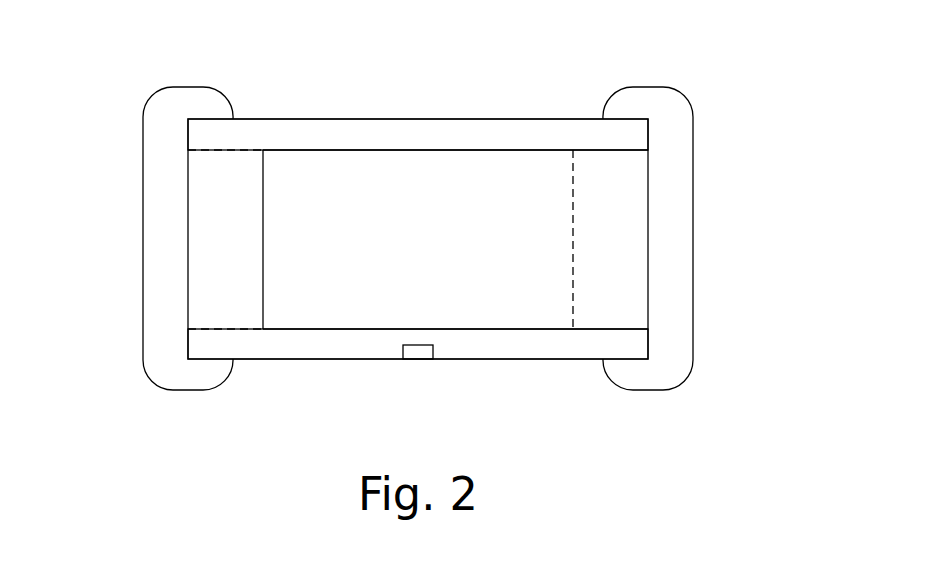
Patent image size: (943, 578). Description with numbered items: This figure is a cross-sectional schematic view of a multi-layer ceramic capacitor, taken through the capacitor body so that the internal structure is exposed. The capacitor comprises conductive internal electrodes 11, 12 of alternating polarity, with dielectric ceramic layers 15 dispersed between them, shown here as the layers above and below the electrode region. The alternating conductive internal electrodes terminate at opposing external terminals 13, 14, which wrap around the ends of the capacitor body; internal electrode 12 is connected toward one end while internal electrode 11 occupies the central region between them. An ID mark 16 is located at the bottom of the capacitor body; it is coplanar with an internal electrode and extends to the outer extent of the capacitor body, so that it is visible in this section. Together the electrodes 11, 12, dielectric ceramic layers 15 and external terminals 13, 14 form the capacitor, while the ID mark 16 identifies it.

The conductive internal electrode 11 is at (431, 261).
The conductive internal electrode 12 is at (238, 258).
The external terminal 13 is at (675, 211).
The external terminal 14 is at (168, 256).
The dielectric ceramic layer 15 is at (378, 138).
The ID mark 16 is at (417, 353).